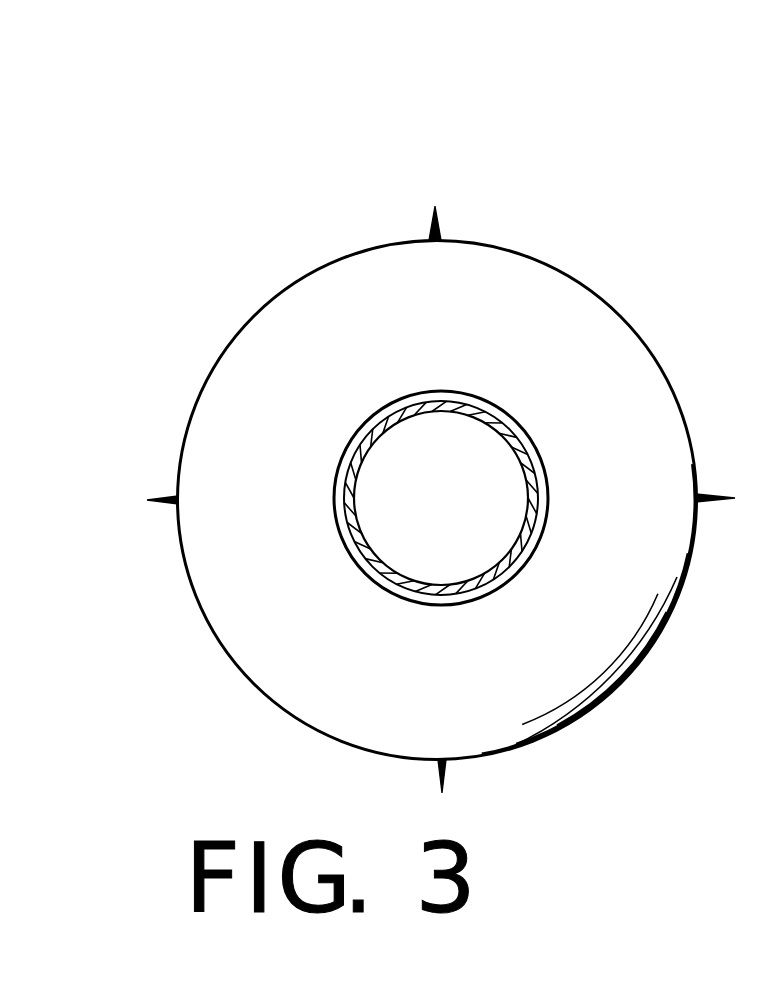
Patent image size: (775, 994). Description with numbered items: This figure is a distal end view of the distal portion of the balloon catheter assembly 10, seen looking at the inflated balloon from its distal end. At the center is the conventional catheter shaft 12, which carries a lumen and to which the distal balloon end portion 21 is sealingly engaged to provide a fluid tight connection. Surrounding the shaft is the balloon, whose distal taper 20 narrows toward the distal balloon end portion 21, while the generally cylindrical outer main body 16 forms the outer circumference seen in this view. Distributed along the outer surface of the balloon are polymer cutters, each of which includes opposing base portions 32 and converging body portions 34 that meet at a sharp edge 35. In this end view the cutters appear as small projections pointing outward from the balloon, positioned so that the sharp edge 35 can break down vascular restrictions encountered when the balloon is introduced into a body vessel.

The balloon catheter assembly 10 is at (185, 285).
The catheter shaft 12 is at (372, 575).
The outer main body 16 is at (593, 285).
The distal taper 20 is at (503, 630).
The distal balloon end portion 21 is at (383, 588).
The base portions 32 is at (424, 238).
The body portions 34 is at (426, 234).
The sharp edge 35 is at (434, 208).